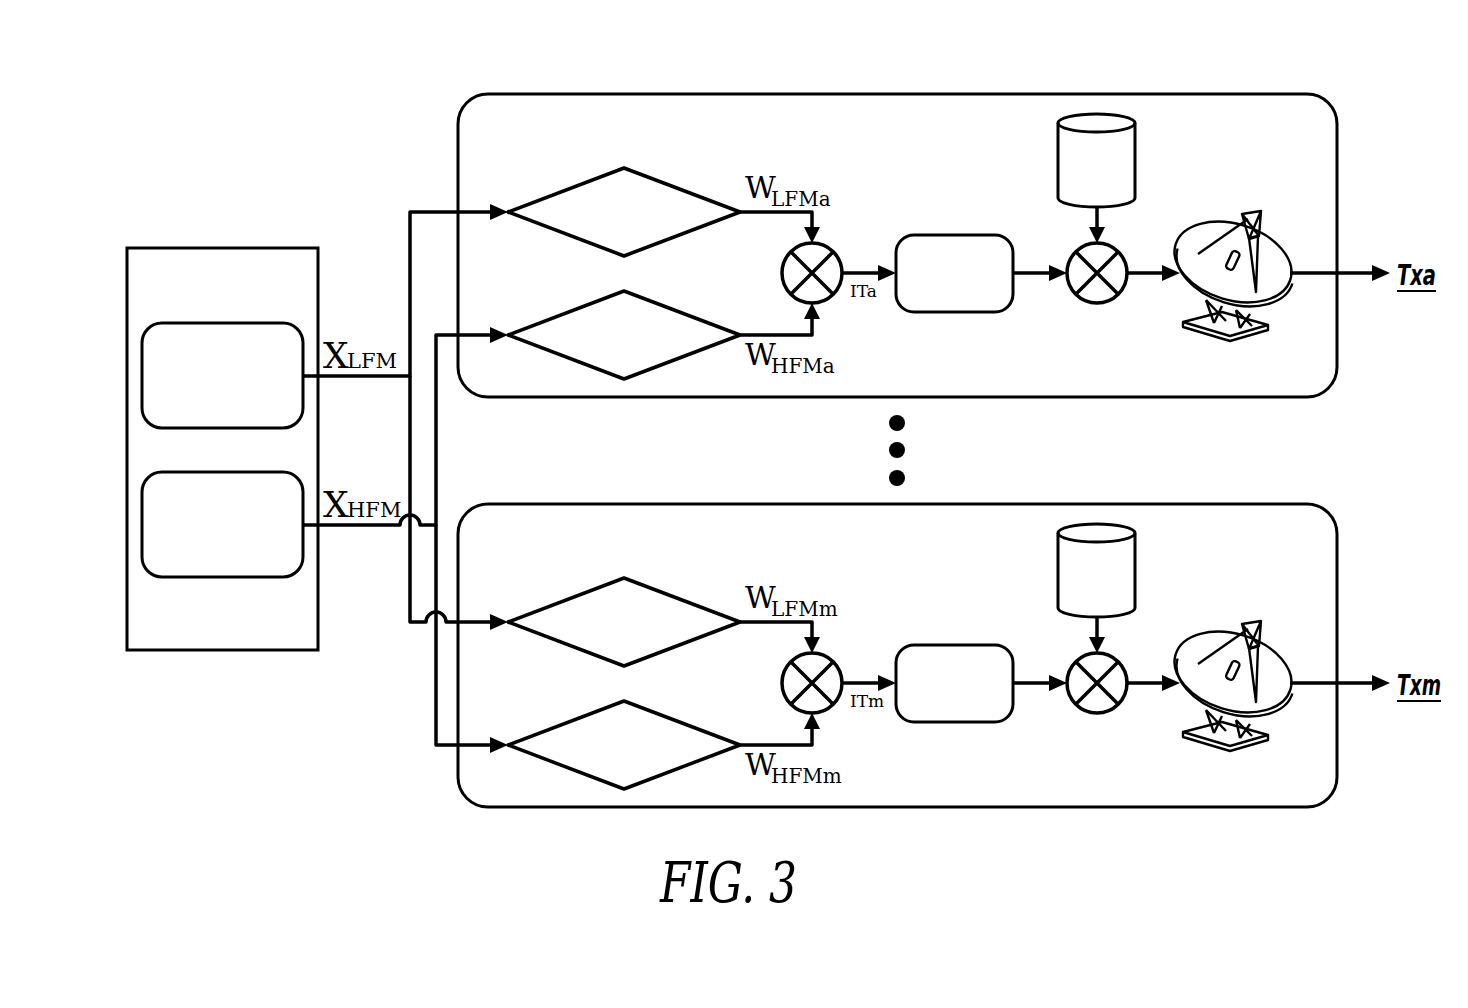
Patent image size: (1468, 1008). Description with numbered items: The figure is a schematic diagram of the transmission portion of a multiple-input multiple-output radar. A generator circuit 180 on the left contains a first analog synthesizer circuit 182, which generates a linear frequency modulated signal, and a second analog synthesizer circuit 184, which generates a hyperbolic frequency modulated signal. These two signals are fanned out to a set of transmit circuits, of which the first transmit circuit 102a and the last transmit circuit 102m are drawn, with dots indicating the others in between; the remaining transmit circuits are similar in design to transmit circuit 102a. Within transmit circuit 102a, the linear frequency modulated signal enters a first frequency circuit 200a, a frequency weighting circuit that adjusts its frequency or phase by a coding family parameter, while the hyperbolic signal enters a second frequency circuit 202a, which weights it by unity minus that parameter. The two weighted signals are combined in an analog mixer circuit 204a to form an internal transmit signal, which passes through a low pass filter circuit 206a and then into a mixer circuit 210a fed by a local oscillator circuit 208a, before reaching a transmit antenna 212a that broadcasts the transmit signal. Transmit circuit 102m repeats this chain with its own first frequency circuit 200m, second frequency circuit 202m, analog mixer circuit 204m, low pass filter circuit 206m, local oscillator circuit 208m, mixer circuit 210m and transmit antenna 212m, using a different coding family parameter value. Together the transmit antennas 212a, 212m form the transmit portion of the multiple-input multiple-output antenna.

The generator circuit 180 is at (176, 236).
The first analog synthesizer circuit 182 is at (245, 391).
The second analog synthesizer circuit 184 is at (245, 539).
The transmit circuit 102a is at (609, 82).
The transmit circuit 102m is at (611, 492).
The first frequency circuit 200a is at (653, 226).
The second frequency circuit 202a is at (653, 349).
The analog mixer circuit 204a is at (840, 257).
The low pass filter circuit 206a is at (985, 288).
The local oscillator circuit 208a is at (1127, 174).
The mixer circuit 210a is at (1073, 298).
The transmit antenna 212a is at (1184, 285).
The first frequency circuit 200m is at (657, 636).
The second frequency circuit 202m is at (657, 759).
The analog mixer circuit 204m is at (840, 667).
The low pass filter circuit 206m is at (987, 698).
The local oscillator circuit 208m is at (1129, 584).
The mixer circuit 210m is at (1073, 708).
The transmit antenna 212m is at (1184, 695).